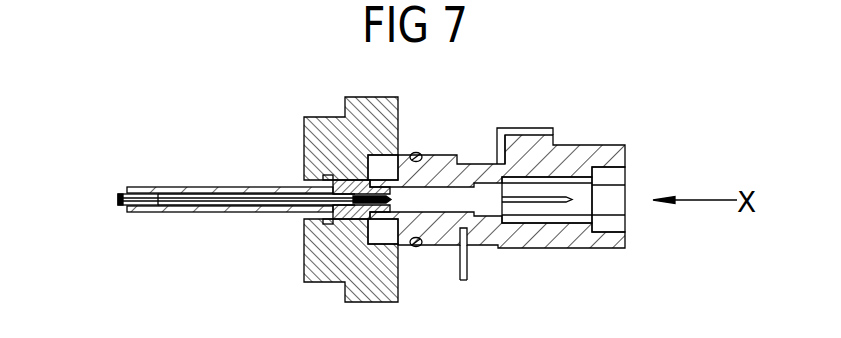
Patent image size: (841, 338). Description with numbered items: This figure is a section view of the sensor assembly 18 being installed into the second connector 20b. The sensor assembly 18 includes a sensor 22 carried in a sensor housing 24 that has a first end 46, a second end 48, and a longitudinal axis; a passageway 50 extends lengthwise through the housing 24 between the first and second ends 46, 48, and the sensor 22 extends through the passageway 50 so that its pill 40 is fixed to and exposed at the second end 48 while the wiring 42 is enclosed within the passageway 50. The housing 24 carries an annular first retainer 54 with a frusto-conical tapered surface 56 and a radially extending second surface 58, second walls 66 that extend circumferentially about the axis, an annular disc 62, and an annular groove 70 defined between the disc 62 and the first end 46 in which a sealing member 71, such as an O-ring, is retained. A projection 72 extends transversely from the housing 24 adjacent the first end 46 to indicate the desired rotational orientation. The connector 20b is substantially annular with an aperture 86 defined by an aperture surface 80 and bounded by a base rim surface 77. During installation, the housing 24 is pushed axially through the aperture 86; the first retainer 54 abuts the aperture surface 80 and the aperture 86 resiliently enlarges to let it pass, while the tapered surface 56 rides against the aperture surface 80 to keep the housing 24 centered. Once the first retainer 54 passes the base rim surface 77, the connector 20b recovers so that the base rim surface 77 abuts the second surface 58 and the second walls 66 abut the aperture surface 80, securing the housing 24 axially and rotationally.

The sensor assembly 18 is at (637, 80).
The second connector 20b is at (403, 99).
The sensor 22 is at (108, 216).
The sensor housing 24 is at (523, 123).
The pill 40 is at (143, 207).
The wiring 42 is at (201, 206).
The first end 46 is at (600, 249).
The second end 48 is at (132, 187).
The passageway 50 is at (224, 189).
The first retainer 54 is at (323, 162).
The tapered surface 56 is at (338, 222).
The second surface 58 is at (336, 234).
The annular disc 62 is at (385, 156).
The second wall 66 is at (344, 160).
The annular groove 70 is at (416, 247).
The sealing member 71 is at (419, 155).
The projection 72 is at (469, 264).
The base rim surface 77 is at (304, 261).
The aperture surface 80 is at (398, 300).
The aperture 86 is at (304, 189).